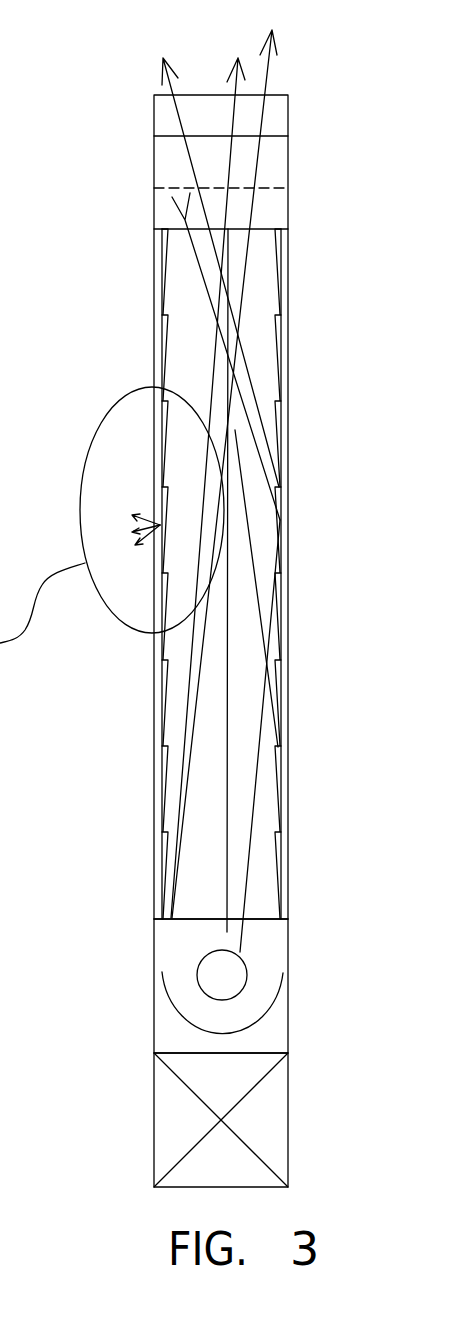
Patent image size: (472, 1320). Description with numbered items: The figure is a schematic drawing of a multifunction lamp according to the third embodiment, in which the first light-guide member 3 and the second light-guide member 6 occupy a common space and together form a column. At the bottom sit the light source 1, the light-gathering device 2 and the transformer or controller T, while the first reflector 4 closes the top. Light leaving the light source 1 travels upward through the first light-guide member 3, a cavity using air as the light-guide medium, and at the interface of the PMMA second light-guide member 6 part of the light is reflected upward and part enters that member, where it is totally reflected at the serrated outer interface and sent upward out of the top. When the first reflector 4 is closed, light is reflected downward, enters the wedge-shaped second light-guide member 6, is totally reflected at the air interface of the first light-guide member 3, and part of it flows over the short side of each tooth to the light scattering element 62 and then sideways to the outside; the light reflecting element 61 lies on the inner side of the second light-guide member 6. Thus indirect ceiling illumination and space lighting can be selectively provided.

The light source 1 is at (230, 963).
The light-gathering device 2 is at (265, 1023).
The first light-guide member 3 is at (233, 660).
The first reflector 4 is at (267, 189).
The second light-guide member 6 is at (197, 327).
The light reflecting element 61 is at (197, 578).
The light scattering element 62 is at (155, 268).
The transformer or controller T is at (273, 1110).